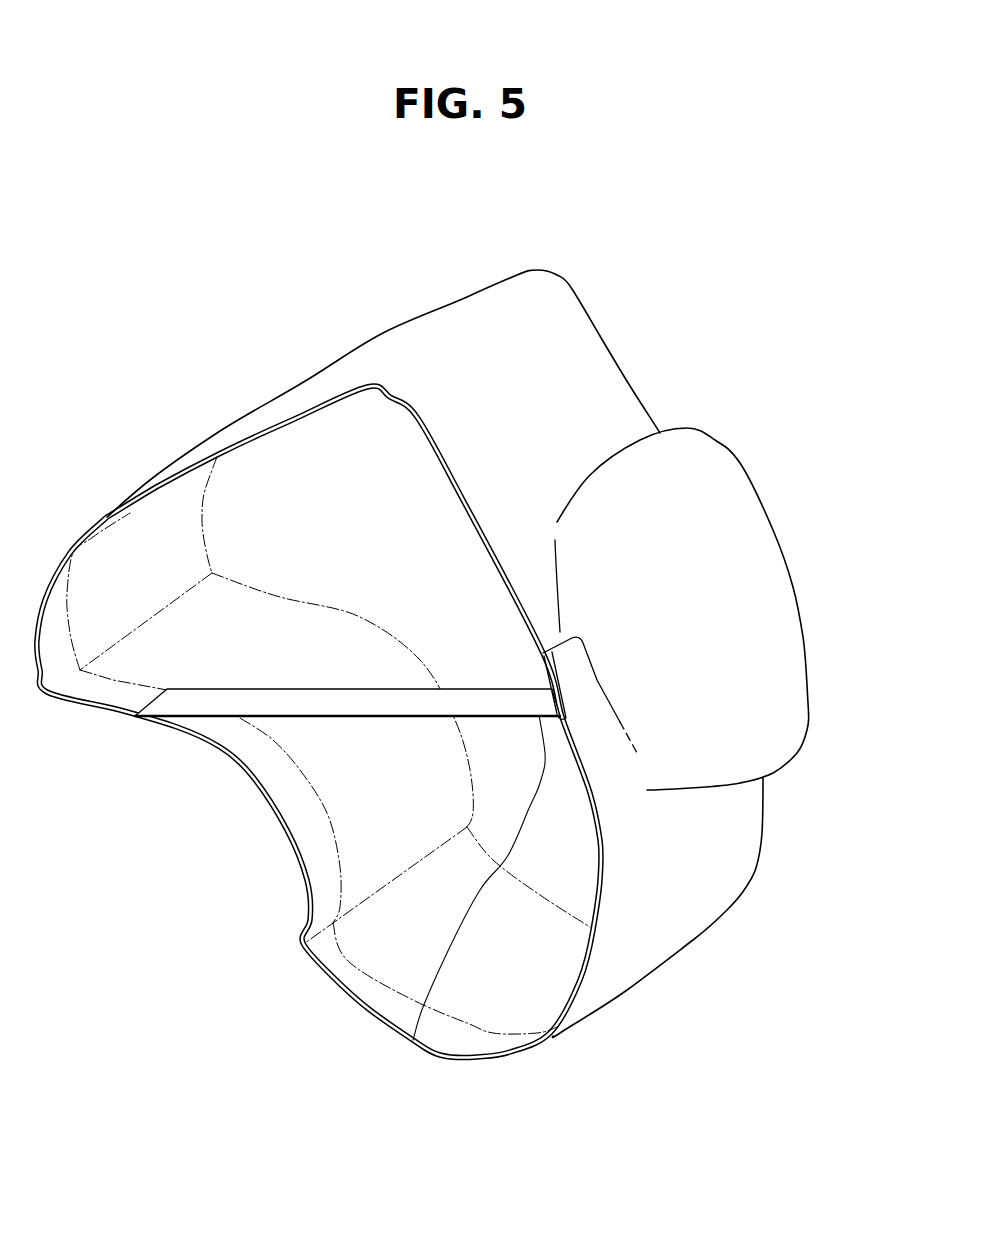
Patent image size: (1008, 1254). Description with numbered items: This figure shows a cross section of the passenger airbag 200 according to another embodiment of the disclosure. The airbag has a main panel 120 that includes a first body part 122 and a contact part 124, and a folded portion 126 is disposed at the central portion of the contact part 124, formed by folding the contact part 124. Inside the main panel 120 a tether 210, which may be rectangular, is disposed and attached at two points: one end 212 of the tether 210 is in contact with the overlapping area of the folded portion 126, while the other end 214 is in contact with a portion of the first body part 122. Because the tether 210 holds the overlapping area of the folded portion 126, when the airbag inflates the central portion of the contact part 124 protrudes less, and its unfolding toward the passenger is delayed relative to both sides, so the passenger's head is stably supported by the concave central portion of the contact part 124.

The passenger airbag 200 is at (78, 244).
The main panel 120 is at (615, 318).
The first body part 122 is at (388, 360).
The contact part 124 is at (763, 732).
The folded portion 126 is at (608, 685).
The tether 210 is at (337, 720).
The one end 212 is at (413, 1040).
The other end 214 is at (163, 700).